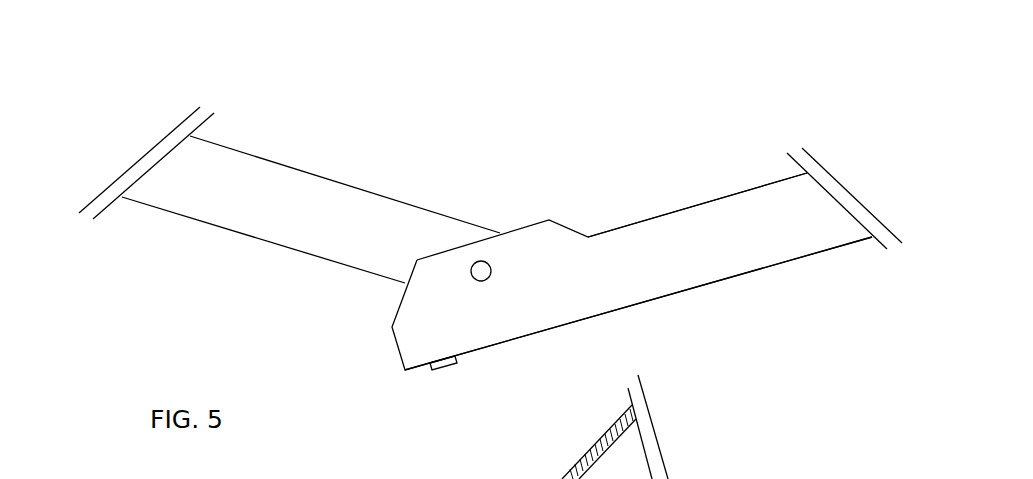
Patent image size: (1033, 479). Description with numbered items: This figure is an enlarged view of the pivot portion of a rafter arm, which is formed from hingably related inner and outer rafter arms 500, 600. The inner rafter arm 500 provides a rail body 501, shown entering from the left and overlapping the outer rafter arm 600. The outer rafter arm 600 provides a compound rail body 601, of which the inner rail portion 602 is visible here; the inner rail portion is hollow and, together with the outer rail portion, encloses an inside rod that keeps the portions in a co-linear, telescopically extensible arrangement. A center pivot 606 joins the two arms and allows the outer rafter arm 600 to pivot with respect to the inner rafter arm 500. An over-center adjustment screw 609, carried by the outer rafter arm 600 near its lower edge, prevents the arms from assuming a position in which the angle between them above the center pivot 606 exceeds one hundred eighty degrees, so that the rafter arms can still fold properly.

The inner rafter arm 500 is at (222, 285).
The rail body 501 is at (312, 168).
The outer rafter arm 600 is at (715, 118).
The compound rail body 601 is at (662, 163).
The inner rail portion 602 is at (675, 300).
The center pivot 606 is at (481, 270).
The over-center adjustment screw 609 is at (445, 380).